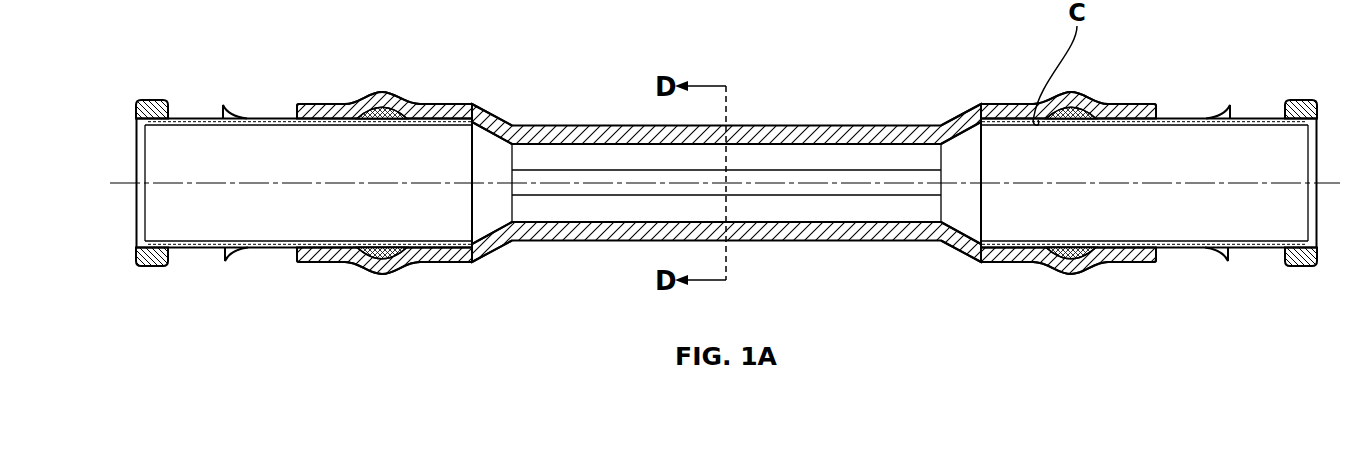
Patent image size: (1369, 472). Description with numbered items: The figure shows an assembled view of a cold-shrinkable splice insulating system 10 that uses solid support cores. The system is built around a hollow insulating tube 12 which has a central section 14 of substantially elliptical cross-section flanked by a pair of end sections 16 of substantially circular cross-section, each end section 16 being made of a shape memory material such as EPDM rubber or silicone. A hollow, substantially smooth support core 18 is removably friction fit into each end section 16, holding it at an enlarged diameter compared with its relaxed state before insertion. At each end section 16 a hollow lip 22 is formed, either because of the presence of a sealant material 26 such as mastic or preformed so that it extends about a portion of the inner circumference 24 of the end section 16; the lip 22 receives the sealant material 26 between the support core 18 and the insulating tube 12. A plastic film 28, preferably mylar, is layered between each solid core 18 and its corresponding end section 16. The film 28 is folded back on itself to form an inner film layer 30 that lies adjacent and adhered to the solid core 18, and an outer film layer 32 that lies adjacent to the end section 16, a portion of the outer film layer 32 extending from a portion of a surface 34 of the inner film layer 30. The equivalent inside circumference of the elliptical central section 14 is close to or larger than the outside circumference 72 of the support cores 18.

The cold-shrinkable splice insulating system 10 is at (725, 181).
The hollow insulating tube 12 is at (830, 132).
The central section 14 is at (633, 125).
The end sections 16 is at (428, 103).
The solid support cores 18 is at (153, 267).
The hollow lip 22 is at (380, 96).
The inner circumference 24 is at (395, 110).
The sealant material 26 is at (363, 112).
The film 28 is at (272, 117).
The inner film layer 30 is at (199, 117).
The outer film layer 32 is at (230, 253).
The surface of the inner film layer 34 is at (222, 256).
The outside circumference of the support cores 72 is at (458, 103).